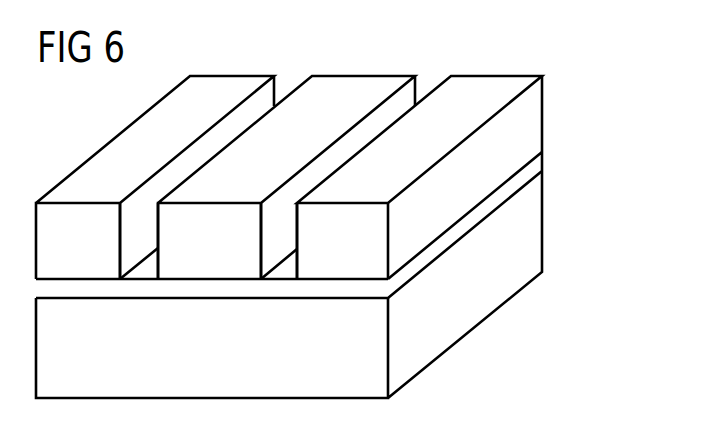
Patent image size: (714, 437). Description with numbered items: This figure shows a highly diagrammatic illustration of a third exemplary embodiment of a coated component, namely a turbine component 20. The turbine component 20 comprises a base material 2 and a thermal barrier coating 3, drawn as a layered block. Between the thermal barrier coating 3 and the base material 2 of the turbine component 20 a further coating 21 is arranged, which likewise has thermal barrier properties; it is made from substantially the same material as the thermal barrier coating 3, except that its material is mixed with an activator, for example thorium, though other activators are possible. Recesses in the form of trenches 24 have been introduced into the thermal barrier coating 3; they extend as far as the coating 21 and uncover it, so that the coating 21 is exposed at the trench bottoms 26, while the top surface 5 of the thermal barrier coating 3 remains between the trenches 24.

The base material 2 is at (530, 237).
The thermal barrier coating 3 is at (532, 124).
The top surface 5 is at (483, 90).
The turbine component 20 is at (568, 97).
The coating 21 is at (536, 167).
The trenches 24 is at (180, 178).
The trench bottom 26 is at (147, 272).